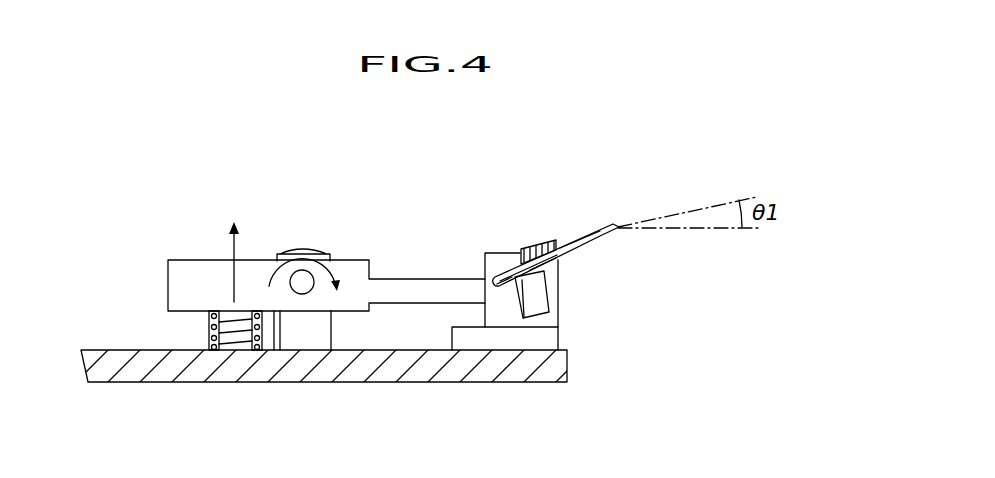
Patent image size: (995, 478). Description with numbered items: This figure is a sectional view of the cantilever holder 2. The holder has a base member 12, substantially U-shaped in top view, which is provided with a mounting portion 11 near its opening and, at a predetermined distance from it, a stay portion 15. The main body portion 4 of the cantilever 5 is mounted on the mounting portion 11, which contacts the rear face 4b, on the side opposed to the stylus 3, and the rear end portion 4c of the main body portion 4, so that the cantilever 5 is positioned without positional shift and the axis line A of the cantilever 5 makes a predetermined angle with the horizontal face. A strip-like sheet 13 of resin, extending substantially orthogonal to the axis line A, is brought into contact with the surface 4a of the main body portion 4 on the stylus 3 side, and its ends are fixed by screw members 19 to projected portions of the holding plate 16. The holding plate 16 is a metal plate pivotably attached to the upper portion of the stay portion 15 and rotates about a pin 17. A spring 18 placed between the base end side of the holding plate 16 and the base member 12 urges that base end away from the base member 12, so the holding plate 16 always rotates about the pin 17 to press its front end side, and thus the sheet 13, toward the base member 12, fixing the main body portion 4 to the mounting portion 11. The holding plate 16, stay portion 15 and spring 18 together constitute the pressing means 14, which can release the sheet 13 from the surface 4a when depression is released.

The cantilever holder 2 is at (726, 132).
The stylus 3 is at (622, 222).
The main body portion 4 is at (575, 247).
The surface 4a is at (563, 250).
The rear face 4b is at (573, 243).
The rear end portion 4c is at (499, 268).
The cantilever 5 is at (603, 232).
The mounting portion 11 is at (487, 252).
The base member 12 is at (456, 371).
The sheet 13 is at (560, 255).
The pressing means 14 is at (298, 178).
The stay portion 15 is at (302, 340).
The holding plate 16 is at (360, 254).
The pin 17 is at (303, 285).
The spring 18 is at (232, 343).
The screw member 19 is at (537, 305).
The axis line A is at (753, 193).